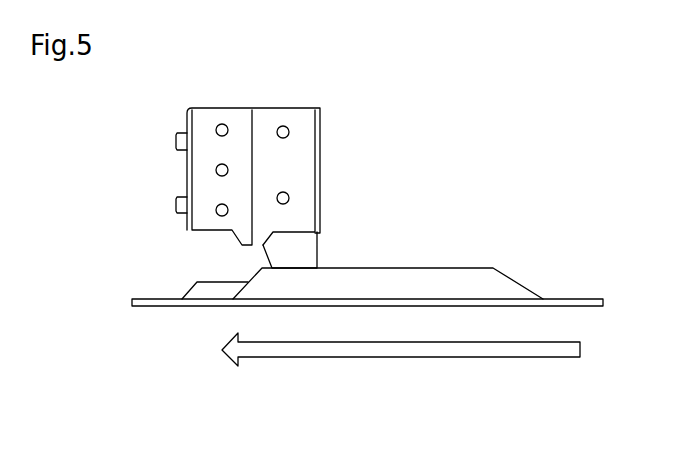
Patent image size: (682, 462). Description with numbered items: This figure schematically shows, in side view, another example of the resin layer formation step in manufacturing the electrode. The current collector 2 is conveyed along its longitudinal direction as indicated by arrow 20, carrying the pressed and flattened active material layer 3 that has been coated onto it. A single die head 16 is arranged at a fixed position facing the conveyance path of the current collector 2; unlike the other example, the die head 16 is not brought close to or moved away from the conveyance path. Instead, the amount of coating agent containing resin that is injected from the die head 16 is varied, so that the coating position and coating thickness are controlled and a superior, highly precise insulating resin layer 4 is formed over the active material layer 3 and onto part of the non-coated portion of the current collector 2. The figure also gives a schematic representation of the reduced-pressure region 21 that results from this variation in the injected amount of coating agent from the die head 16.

The current collector 2 is at (573, 300).
The active material layer 3 is at (458, 283).
The resin layer 4 is at (200, 292).
The die head 16 is at (302, 130).
The arrow 20 is at (405, 350).
The reduced-pressure region 21 is at (310, 250).